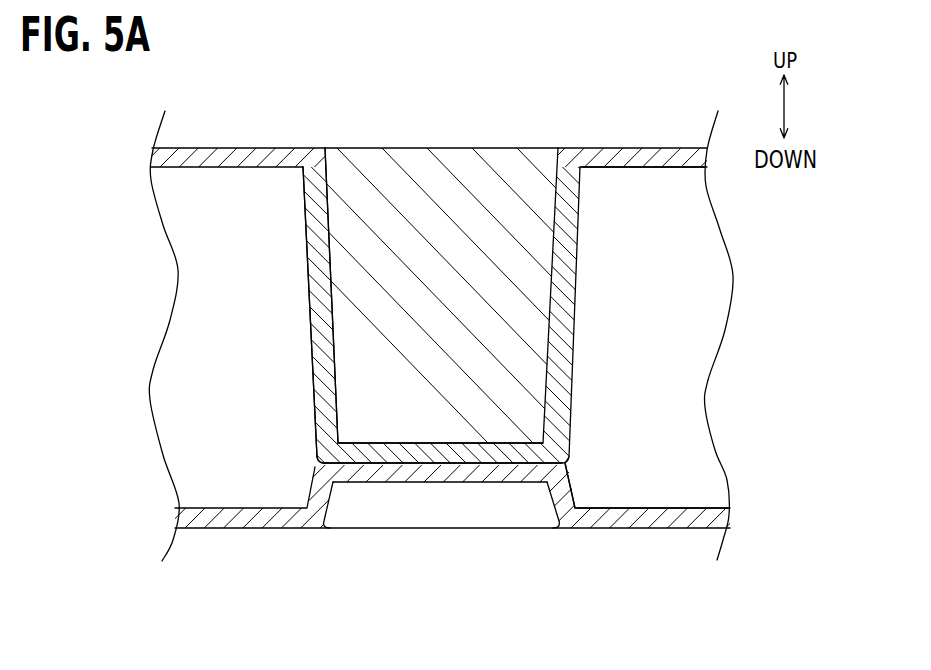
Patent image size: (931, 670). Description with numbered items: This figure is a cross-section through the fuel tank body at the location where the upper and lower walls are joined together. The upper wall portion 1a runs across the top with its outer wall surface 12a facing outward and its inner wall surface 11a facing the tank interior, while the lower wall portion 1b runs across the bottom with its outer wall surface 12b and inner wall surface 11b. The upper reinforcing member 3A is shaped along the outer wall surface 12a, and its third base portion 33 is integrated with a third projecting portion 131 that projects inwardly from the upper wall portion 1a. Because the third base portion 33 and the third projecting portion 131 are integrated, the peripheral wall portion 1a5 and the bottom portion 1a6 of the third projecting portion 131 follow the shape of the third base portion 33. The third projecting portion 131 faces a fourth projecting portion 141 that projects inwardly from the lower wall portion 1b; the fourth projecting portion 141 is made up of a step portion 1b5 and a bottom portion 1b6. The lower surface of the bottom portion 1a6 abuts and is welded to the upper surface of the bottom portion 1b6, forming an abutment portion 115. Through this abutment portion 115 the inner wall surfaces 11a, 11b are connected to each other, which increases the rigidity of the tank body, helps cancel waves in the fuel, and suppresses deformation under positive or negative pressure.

The upper wall portion 1a is at (237, 154).
The outer wall surface 12a is at (634, 138).
The inner wall surface 11a is at (662, 177).
The upper reinforcing member 3A is at (417, 138).
The third base portion 33 is at (455, 142).
The third projecting portion 131 is at (310, 327).
The peripheral wall portion 1a5 is at (318, 240).
The bottom portion 1a6 is at (397, 443).
The fourth projecting portion 141 is at (316, 468).
The abutment portion 115 is at (592, 452).
The lower wall portion 1b is at (237, 513).
The bottom portion 1b6 is at (447, 483).
The step portion 1b5 is at (318, 490).
The outer wall surface 12b is at (625, 538).
The inner wall surface 11b is at (710, 500).